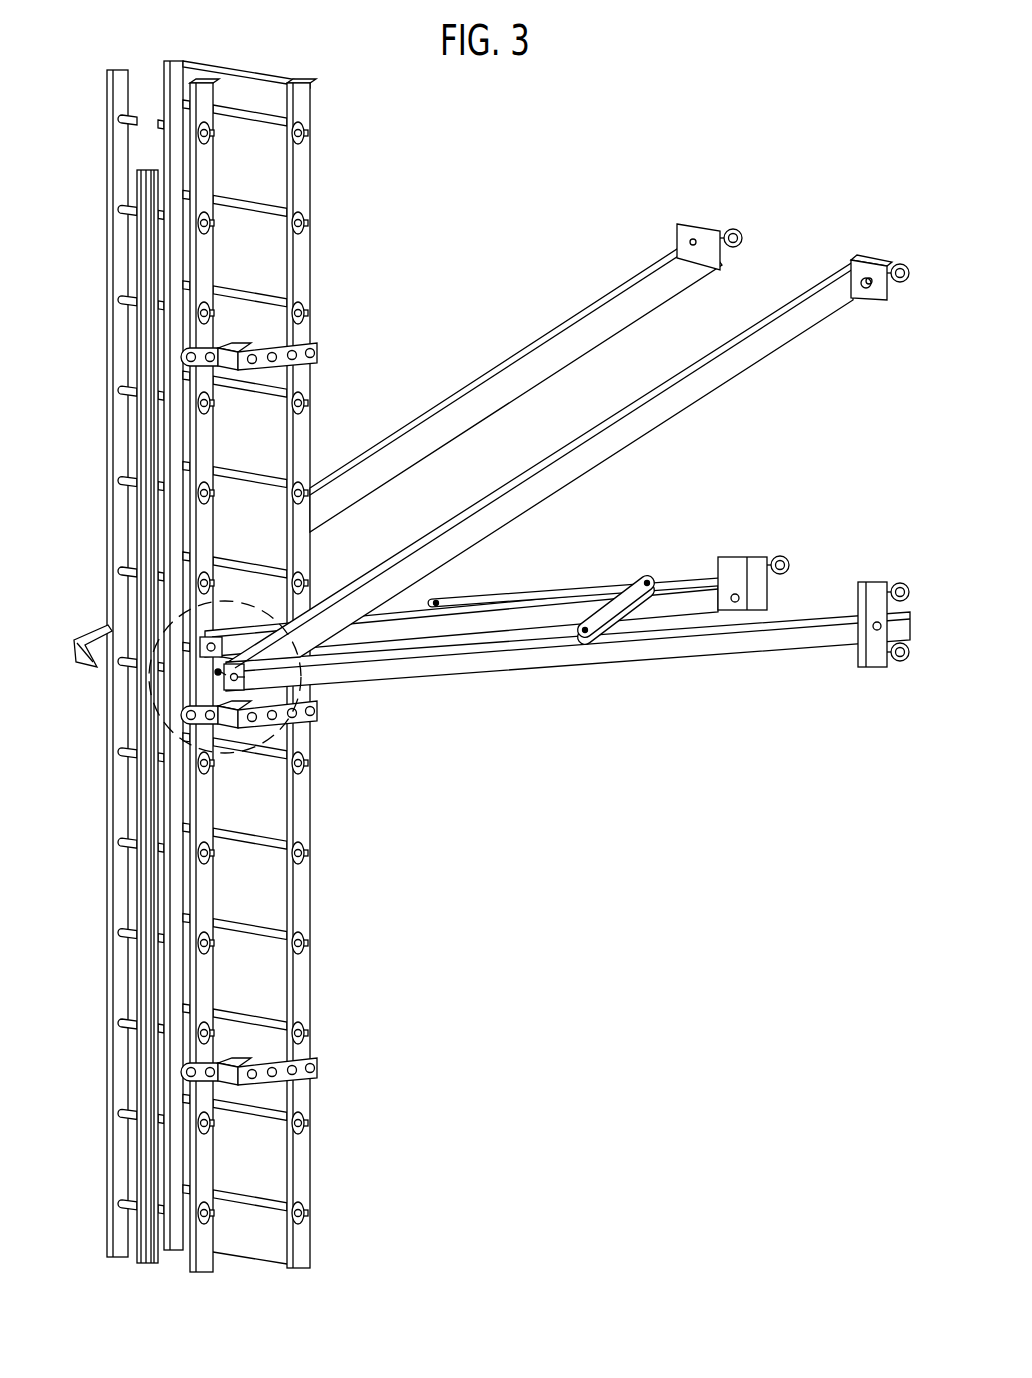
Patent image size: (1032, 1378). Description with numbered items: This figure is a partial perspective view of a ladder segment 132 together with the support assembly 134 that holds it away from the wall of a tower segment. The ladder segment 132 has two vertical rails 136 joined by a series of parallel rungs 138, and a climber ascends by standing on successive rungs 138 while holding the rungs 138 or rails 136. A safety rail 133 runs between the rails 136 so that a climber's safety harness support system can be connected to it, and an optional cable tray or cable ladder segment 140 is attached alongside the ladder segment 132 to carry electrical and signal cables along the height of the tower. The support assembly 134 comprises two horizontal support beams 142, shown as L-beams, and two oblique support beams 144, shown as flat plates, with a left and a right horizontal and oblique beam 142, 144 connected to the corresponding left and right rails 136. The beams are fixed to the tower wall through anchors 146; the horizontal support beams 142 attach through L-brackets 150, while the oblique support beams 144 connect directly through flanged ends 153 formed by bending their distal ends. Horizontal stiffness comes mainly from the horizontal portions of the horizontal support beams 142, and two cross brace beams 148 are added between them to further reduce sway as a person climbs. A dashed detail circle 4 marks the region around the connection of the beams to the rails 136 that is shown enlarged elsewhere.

The ladder segment 132 is at (115, 58).
The safety rail 133 is at (140, 245).
The support assembly 134 is at (535, 305).
The rails 136 is at (110, 325).
The rungs 138 is at (170, 362).
The cable tray or cable ladder segment 140 is at (247, 72).
The horizontal support beams 142 is at (693, 600).
The oblique support beams 144 is at (512, 383).
The anchors 146 is at (736, 228).
The cross brace beams 148 is at (625, 598).
The L-brackets 150 is at (737, 568).
The flanged ends 153 is at (700, 235).
The detail view circle (FIG. 4) 4 is at (279, 731).